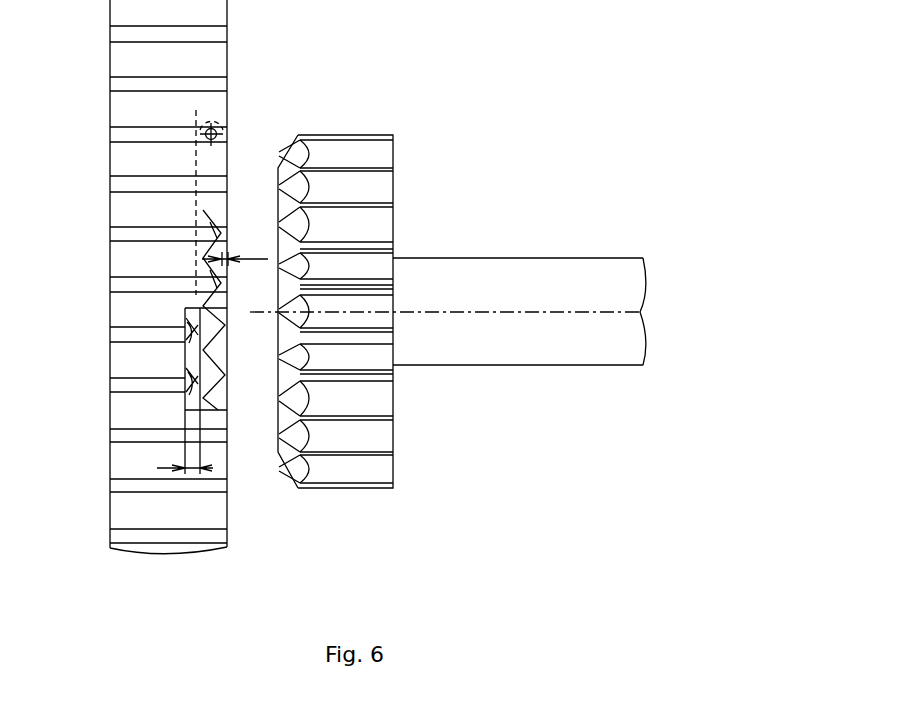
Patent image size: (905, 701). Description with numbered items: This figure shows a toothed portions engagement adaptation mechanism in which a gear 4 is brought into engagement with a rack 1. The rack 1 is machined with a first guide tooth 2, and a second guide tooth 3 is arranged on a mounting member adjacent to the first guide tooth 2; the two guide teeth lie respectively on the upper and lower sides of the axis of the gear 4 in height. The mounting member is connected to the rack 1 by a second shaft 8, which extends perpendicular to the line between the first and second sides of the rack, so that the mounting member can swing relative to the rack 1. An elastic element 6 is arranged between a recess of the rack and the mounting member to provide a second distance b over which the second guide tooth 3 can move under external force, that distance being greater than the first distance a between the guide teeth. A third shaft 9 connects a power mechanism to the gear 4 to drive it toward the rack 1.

The rack 1 is at (157, 67).
The first guide tooth 2 is at (207, 282).
The second guide tooth 3 is at (184, 318).
The gear 4 is at (362, 185).
The elastic element 6 is at (187, 375).
The second shaft 8 is at (200, 130).
The third shaft 9 is at (537, 287).